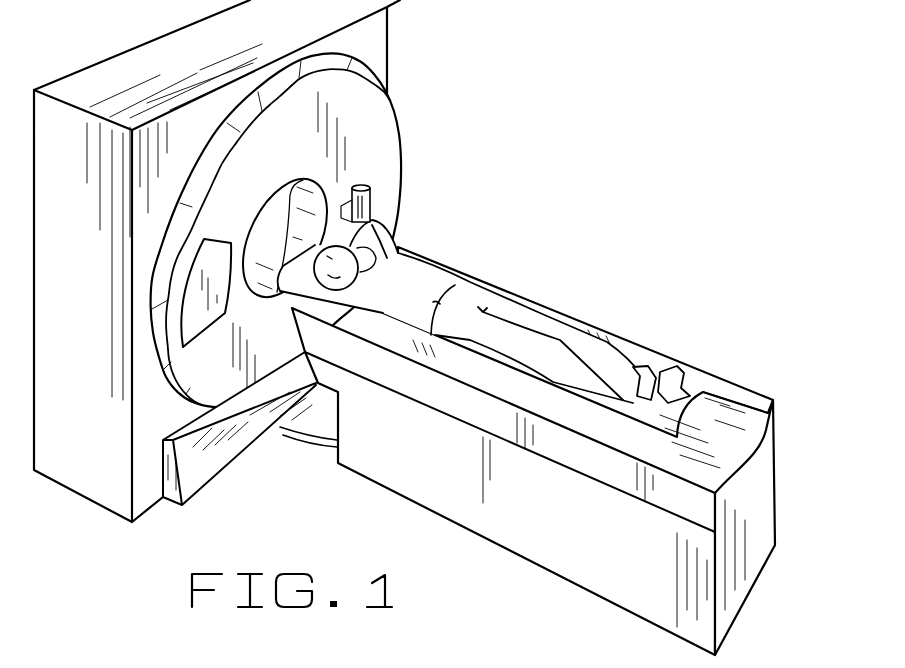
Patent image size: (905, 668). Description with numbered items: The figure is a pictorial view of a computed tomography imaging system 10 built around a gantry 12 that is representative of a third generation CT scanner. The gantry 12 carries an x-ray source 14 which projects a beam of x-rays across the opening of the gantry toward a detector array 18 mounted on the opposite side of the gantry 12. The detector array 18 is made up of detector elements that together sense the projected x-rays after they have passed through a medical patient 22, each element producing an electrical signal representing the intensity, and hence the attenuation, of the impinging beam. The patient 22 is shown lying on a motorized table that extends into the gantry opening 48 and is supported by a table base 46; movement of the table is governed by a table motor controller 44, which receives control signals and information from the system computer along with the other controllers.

The computed tomography (CT) imaging system 10 is at (312, 448).
The gantry 12 is at (63, 137).
The x-ray source 14 is at (375, 202).
The detector array 18 is at (200, 310).
The medical patient 22 is at (410, 280).
The table motor controller 44 is at (347, 667).
The table base / motorized table 46 is at (412, 467).
The gantry opening / bore 48 is at (280, 228).